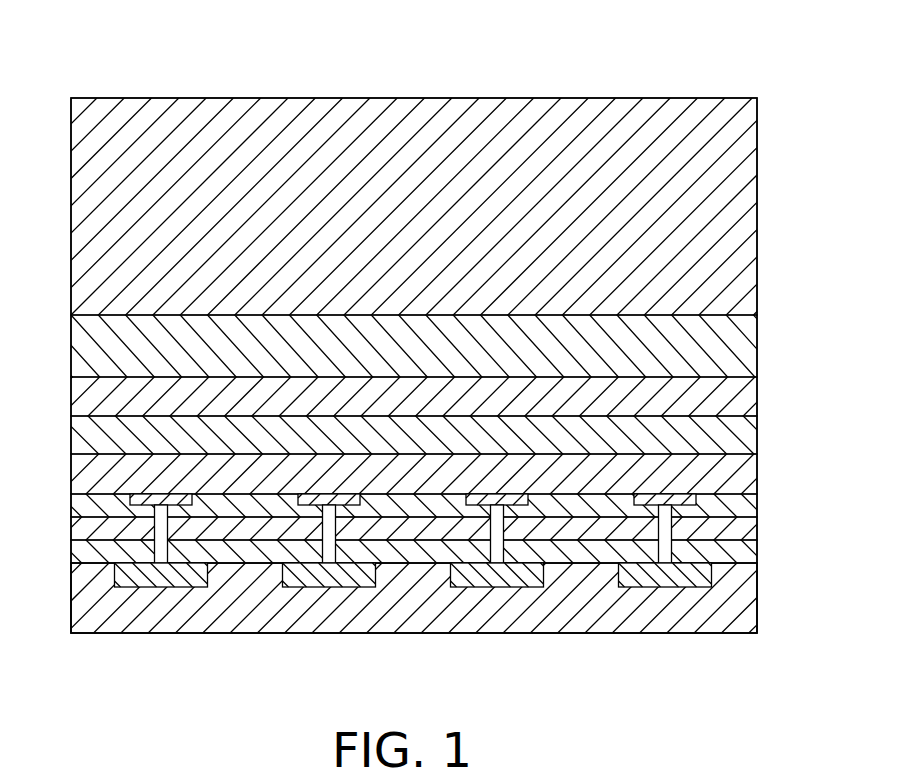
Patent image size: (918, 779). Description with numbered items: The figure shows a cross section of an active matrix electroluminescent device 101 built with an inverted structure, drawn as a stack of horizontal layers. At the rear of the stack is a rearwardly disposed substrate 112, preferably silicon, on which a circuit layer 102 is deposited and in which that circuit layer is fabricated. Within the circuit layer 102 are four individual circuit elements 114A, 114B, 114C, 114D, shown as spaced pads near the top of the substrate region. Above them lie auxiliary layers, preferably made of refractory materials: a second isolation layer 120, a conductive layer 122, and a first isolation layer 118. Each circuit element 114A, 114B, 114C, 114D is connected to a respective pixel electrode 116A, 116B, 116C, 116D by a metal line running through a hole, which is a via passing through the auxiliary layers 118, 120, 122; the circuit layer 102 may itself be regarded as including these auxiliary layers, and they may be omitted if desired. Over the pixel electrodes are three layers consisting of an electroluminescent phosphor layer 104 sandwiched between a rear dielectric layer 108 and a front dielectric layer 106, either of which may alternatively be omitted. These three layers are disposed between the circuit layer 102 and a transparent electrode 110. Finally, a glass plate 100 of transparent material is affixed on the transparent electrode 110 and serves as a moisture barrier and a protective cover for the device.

The active matrix electroluminescent device 101 is at (120, 53).
The glass plate 100 is at (758, 188).
The transparent electrode 110 is at (758, 345).
The front dielectric layer 106 is at (758, 400).
The electroluminescent phosphor layer 104 is at (758, 438).
The rear dielectric layer 108 is at (758, 475).
The first isolation layer 118 is at (758, 500).
The conductive layer 122 is at (758, 528).
The second isolation layer 120 is at (758, 555).
The circuit layer 102 is at (758, 582).
The rearwardly disposed substrate 112 is at (758, 623).
The pixel electrode 116A is at (152, 493).
The pixel electrode 116B is at (311, 493).
The pixel electrode 116C is at (486, 493).
The pixel electrode 116D is at (653, 493).
The circuit element 114A is at (135, 588).
The circuit element 114B is at (305, 588).
The circuit element 114C is at (472, 588).
The circuit element 114D is at (640, 588).